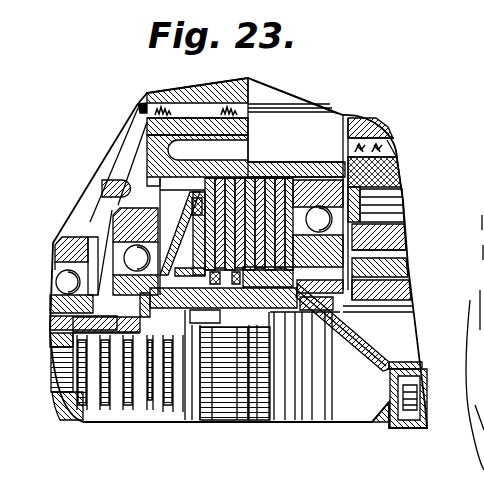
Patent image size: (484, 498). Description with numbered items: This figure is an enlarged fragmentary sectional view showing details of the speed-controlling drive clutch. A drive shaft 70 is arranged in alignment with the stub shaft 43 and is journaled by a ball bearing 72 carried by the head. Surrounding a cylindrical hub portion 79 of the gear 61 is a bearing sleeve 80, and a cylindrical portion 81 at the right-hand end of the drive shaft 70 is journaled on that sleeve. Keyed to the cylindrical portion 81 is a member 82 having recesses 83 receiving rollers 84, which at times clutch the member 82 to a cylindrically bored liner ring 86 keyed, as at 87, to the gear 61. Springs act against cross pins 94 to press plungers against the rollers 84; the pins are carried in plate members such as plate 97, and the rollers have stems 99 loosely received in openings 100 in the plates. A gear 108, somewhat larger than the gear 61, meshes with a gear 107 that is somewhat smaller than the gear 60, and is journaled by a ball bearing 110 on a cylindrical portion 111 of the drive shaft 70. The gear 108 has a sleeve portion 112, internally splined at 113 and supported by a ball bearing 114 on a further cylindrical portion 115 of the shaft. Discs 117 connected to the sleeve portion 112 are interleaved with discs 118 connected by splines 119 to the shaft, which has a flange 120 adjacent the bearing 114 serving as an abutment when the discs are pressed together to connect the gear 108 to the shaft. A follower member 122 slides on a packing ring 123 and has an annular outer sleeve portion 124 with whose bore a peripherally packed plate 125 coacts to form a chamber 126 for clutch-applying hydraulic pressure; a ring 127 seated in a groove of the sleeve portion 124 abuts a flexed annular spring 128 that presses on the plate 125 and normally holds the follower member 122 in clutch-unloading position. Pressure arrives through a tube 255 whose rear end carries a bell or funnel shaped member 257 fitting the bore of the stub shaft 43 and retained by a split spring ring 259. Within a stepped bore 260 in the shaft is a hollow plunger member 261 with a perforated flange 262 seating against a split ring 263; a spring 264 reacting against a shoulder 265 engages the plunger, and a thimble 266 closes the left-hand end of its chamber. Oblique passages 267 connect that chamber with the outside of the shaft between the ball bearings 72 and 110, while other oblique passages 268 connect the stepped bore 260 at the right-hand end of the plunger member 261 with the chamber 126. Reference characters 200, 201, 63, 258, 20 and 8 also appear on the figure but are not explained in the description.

The gear 107 is at (236, 84).
The gear 108 is at (253, 100).
The plate 200 is at (255, 101).
The wall 201 is at (324, 157).
The sleeve portion 112 is at (328, 125).
The gear 60 is at (359, 118).
The gear 61 is at (375, 132).
The ball bearing 114 is at (402, 137).
The key 87 is at (415, 142).
The end closure or plate member 97 is at (399, 158).
The liner ring 86 is at (412, 163).
The stem 99 is at (402, 183).
The roller 84 is at (395, 209).
The member 82 is at (405, 236).
The cylindrical portion 81 is at (409, 259).
The bearing sleeve 80 is at (406, 277).
The cylindrical hub portion 79 is at (416, 286).
The ring 63 is at (407, 302).
The stub shaft 43 is at (413, 320).
The follower member 122 is at (141, 148).
The annular outer sleeve portion 124 is at (140, 163).
The ring 127 is at (127, 176).
The flexed annular spring 128 is at (118, 194).
The chamber 126 is at (150, 221).
The peripherally packed plate 125 is at (118, 236).
The ball bearing 110 is at (122, 258).
The ball bearing 72 is at (58, 283).
The cylindrical portion 111 is at (50, 309).
The obliquely radially extending passages 267 is at (53, 329).
The drive shaft 70 is at (58, 338).
The thimble 266 is at (57, 365).
The shoulder 265 is at (65, 372).
The stepped bore 260 is at (150, 330).
The spring 264 is at (165, 312).
The packing ring 123 is at (185, 322).
The radially obliquely extending passages 268 is at (160, 400).
The hollow plunger member 261 is at (207, 382).
The splines 119 is at (245, 395).
The perforated flange 262 is at (253, 405).
The split ring 263 is at (282, 405).
The discs 118 is at (308, 330).
The cylindrical portion 115 is at (370, 325).
The plate 258 is at (417, 337).
The split spring ring 259 is at (418, 353).
The tube 255 is at (405, 415).
The bell or funnel shaped member 257 is at (386, 412).
The internal splines 113 is at (249, 158).
The discs 117 is at (266, 170).
The flange 120 is at (285, 178).
The recesses 83 is at (466, 384).
The cross pins 94 is at (483, 301).
The openings 100 is at (480, 410).
The part 20 is at (476, 219).
The part 8 is at (480, 252).